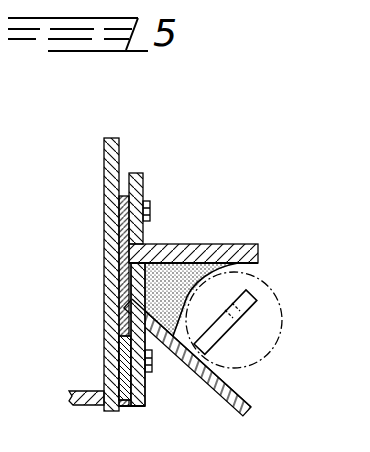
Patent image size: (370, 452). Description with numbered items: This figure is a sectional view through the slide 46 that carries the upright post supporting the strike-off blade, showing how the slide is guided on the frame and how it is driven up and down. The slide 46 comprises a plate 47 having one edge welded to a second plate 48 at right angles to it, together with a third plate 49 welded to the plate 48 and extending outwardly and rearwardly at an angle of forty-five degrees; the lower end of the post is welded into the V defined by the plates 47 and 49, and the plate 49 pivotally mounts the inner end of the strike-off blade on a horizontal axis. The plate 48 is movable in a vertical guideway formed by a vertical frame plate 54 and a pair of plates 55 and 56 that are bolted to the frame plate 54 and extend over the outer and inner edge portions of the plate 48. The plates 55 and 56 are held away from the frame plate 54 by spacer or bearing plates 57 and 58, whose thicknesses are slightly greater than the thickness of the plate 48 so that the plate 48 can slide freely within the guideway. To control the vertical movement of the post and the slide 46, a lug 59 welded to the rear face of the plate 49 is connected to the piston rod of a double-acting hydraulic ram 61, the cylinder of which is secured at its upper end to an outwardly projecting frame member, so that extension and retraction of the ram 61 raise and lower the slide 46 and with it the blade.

The slide 46 is at (202, 388).
The plate 47 is at (191, 245).
The second plate 48 is at (113, 277).
The third plate 49 is at (236, 392).
The vertical frame plate 54 is at (106, 400).
The plate 55 is at (135, 398).
The plate 56 is at (134, 170).
The spacer or bearing plate 57 is at (121, 398).
The spacer or bearing plate 58 is at (116, 186).
The lug 59 is at (241, 291).
The double-acting hydraulic ram 61 is at (280, 330).